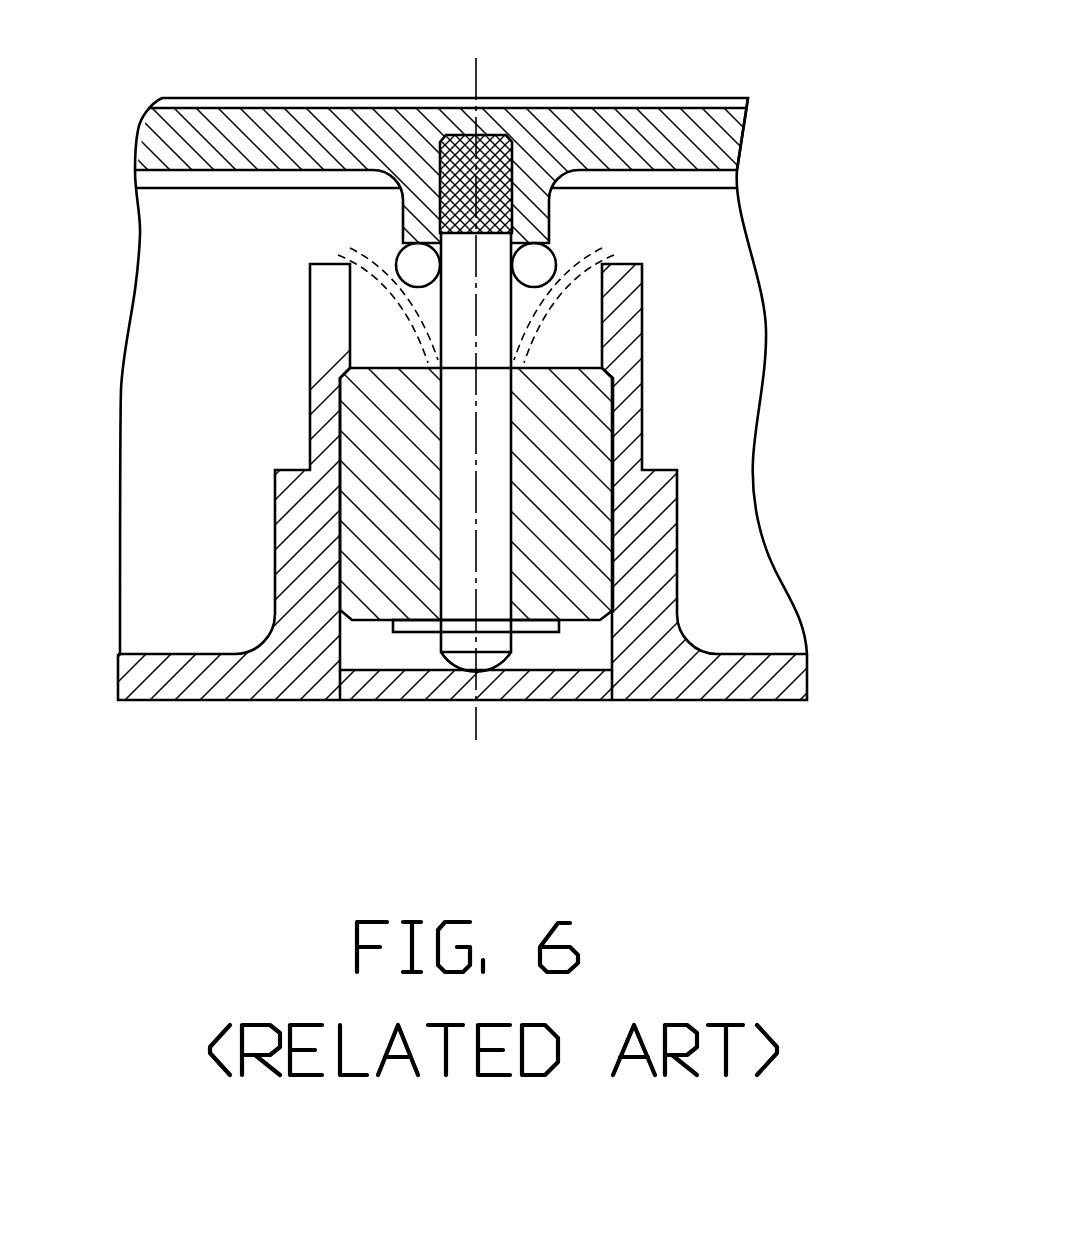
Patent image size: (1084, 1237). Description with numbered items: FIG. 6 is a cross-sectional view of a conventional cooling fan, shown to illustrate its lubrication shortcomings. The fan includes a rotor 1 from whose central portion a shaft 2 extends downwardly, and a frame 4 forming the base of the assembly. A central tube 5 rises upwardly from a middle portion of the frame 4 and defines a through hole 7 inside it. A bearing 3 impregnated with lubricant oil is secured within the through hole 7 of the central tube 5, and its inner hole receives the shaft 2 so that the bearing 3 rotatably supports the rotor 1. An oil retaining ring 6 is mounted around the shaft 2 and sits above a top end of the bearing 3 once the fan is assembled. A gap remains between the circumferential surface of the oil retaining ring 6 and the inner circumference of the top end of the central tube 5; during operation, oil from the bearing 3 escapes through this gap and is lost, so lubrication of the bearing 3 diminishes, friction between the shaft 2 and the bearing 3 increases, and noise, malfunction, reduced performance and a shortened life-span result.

The rotor 1 is at (707, 130).
The shaft 2 is at (462, 595).
The bearing 3 is at (583, 462).
The frame 4 is at (663, 672).
The central tube 5 is at (652, 555).
The oil retaining ring 6 is at (415, 268).
The through hole 7 is at (547, 652).